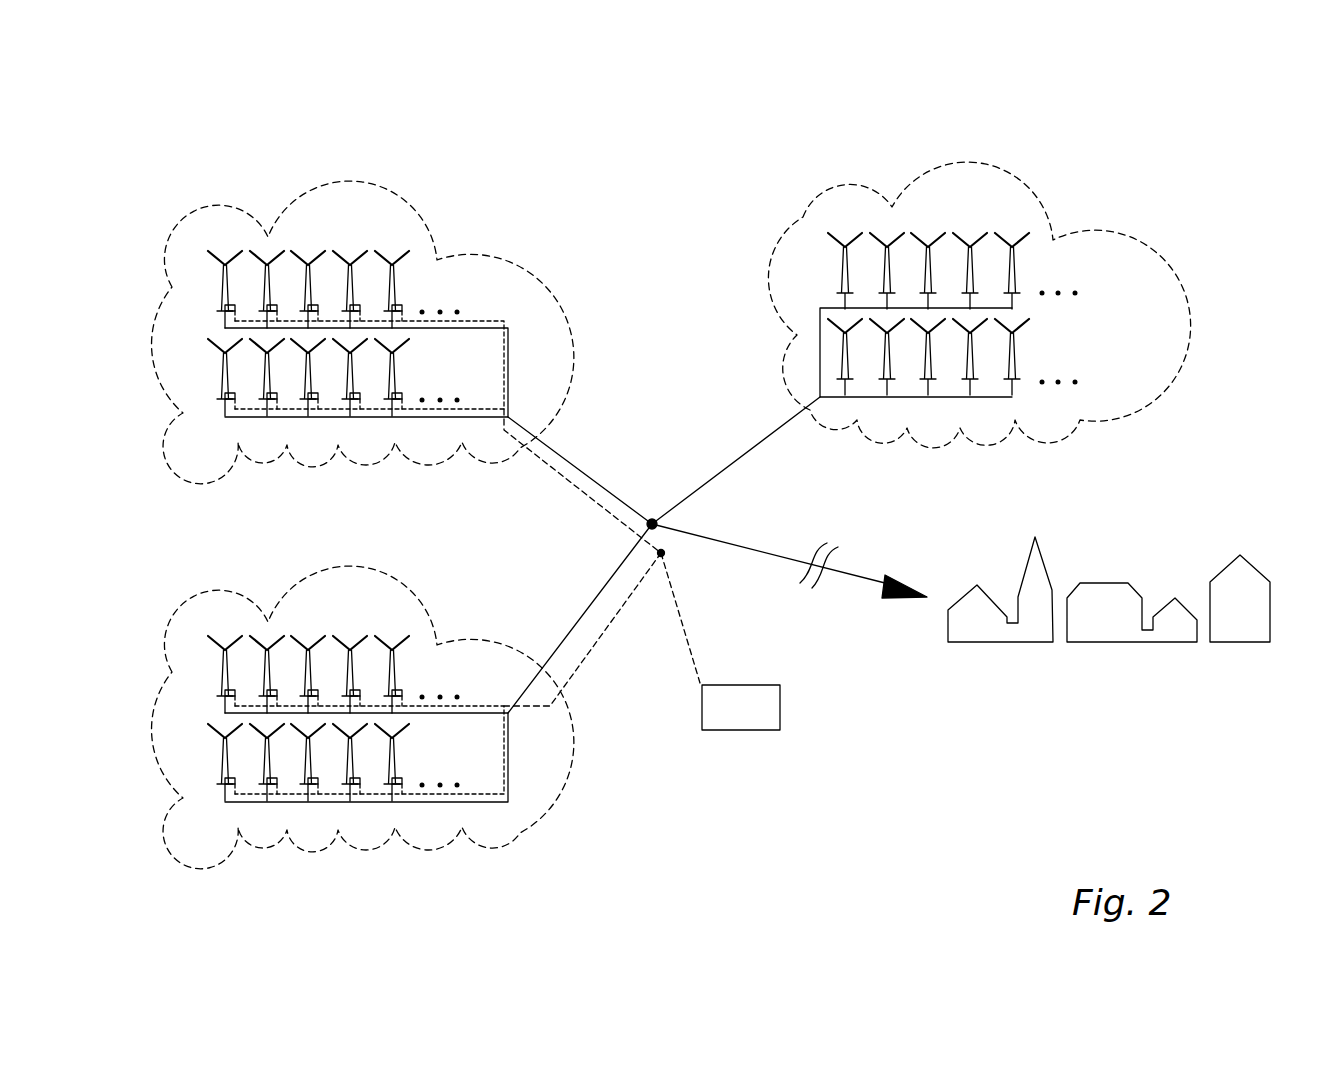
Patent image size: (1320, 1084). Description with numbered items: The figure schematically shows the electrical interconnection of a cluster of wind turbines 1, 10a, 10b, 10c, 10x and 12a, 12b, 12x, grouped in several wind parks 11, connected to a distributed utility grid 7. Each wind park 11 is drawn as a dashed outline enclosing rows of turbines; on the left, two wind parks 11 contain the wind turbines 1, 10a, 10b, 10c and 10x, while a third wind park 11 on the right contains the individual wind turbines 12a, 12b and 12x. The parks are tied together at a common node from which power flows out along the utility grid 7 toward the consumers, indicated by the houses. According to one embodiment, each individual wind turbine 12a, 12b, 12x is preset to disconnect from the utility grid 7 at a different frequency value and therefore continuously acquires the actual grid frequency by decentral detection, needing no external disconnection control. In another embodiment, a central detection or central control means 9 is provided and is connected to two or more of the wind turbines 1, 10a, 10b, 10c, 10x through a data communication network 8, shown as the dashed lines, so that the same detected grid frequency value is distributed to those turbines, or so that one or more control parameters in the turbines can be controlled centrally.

The wind turbine 1 is at (230, 296).
The wind turbine 10a is at (355, 293).
The wind turbine 10b is at (222, 767).
The wind turbine 10c is at (297, 767).
The wind turbine 10x is at (222, 383).
The wind park 11 is at (520, 240).
The wind turbine 12a is at (850, 262).
The wind turbine 12b is at (890, 262).
The wind turbine 12x is at (1017, 263).
The distributed utility grid 7 is at (568, 460).
The data communication network 8 is at (597, 507).
The central control means 9 is at (780, 707).